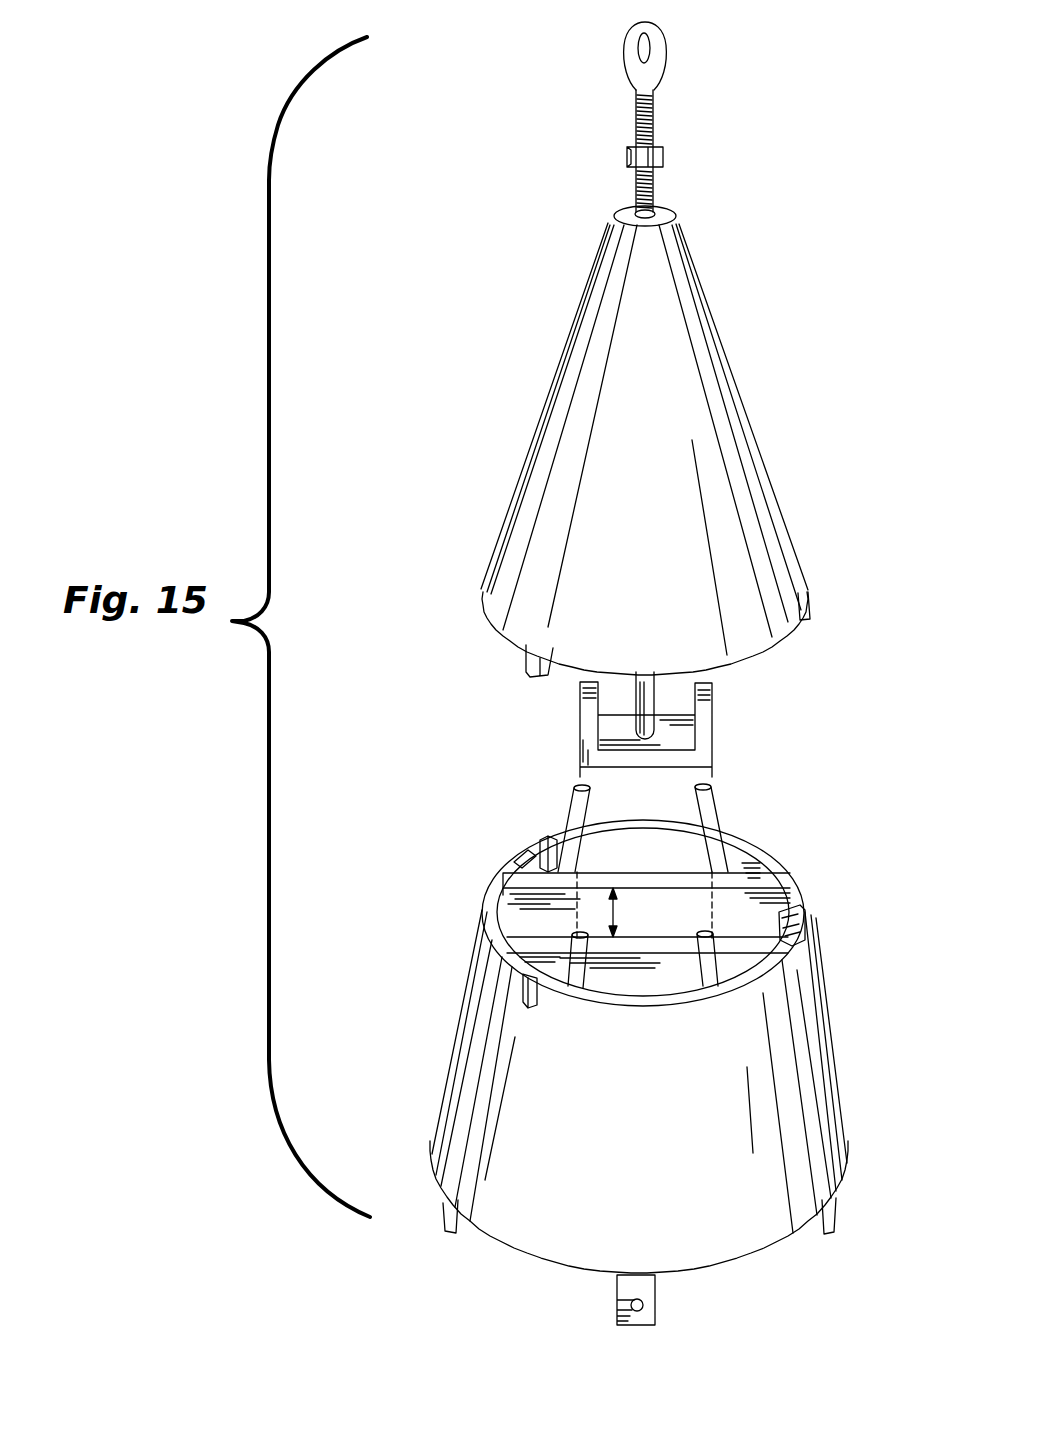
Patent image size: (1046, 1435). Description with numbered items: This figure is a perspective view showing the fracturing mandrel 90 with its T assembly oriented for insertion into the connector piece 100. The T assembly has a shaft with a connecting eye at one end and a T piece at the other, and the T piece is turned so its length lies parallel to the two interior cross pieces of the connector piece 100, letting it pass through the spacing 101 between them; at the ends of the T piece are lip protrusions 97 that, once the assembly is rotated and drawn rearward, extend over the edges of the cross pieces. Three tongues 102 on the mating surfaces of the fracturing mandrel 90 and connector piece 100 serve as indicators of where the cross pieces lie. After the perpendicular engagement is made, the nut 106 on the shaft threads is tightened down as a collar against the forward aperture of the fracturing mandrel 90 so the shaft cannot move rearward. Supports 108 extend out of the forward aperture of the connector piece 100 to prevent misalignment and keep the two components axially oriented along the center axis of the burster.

The cone 90 is at (673, 364).
The lip protrusions 97 is at (587, 728).
The connector piece 100 is at (790, 1000).
The spacing between the cross pieces 101 is at (605, 908).
The tongues 102 is at (535, 648).
The nut 106 is at (662, 160).
The supports 108 is at (712, 805).